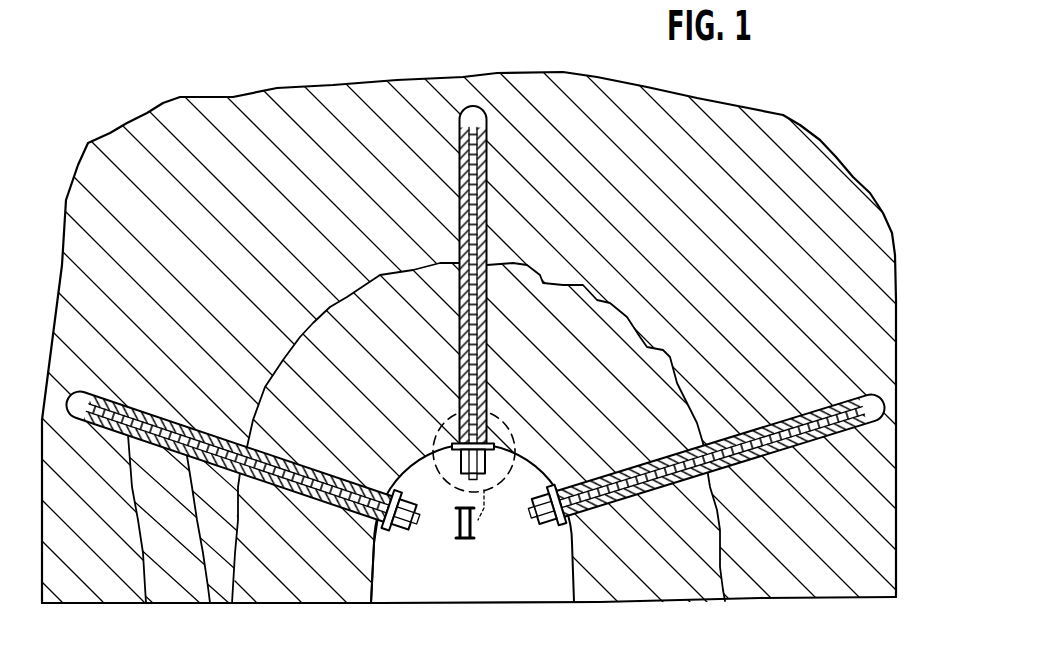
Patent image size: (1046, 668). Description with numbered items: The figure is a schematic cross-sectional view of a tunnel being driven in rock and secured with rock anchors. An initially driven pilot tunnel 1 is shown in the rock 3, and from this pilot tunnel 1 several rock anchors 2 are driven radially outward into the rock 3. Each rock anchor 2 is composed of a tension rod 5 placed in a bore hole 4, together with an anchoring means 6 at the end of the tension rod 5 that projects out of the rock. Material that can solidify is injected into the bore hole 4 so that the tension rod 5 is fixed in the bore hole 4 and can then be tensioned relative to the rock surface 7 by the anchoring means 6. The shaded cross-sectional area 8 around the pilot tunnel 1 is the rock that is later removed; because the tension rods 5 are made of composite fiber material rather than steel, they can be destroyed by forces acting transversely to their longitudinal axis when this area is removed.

The pilot tunnel 1 is at (543, 578).
The rock anchor 2 is at (487, 139).
The rock 3 is at (810, 148).
The bore hole 4 is at (146, 603).
The tension rod 5 is at (210, 603).
The anchoring means 6 is at (411, 529).
The rock surface 7 is at (372, 557).
The shaded cross-sectional area 8 is at (380, 275).